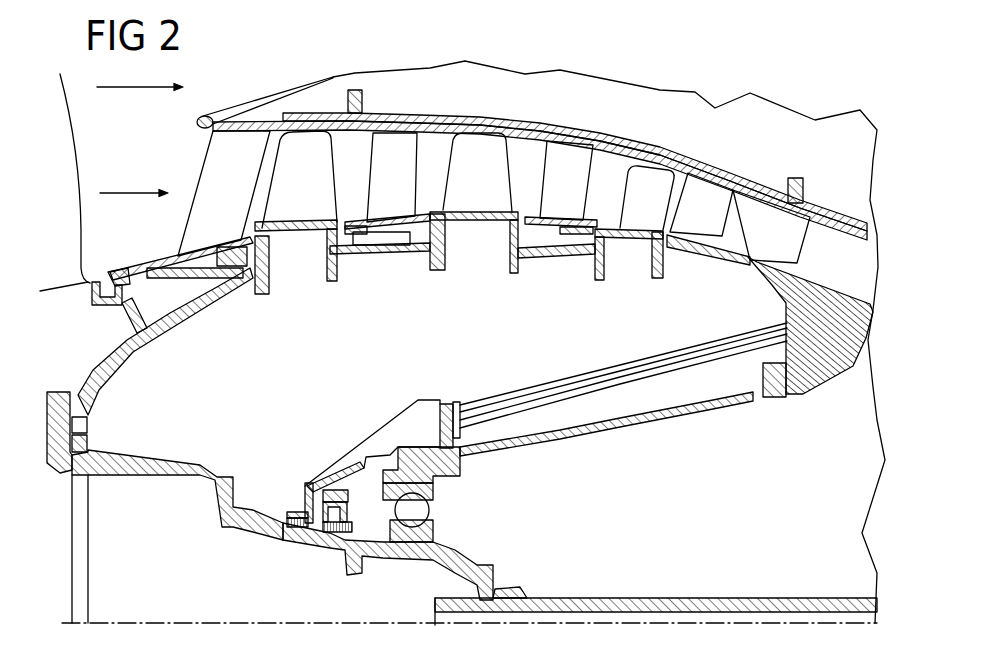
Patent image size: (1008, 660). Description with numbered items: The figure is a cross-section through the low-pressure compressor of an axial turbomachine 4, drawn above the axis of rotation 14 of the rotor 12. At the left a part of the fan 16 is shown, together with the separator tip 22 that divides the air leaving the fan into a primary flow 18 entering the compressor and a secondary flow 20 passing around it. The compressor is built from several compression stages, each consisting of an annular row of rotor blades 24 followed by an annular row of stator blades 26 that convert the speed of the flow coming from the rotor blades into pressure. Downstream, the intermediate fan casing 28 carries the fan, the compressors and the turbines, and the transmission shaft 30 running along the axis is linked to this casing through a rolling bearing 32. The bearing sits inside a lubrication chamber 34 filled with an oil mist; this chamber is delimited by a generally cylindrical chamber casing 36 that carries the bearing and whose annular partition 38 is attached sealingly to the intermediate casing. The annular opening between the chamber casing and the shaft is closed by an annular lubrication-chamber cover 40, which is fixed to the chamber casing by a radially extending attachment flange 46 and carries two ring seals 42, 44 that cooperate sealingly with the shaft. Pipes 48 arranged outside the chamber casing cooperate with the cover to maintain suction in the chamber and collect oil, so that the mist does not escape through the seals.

The turbomachine 4 is at (726, 137).
The rotor 12 is at (90, 413).
The axis of rotation 14 is at (167, 622).
The fan 16 is at (66, 195).
The primary flow 18 is at (134, 179).
The secondary flow 20 is at (140, 74).
The separator tip 22 is at (195, 121).
The rotor blades 24 is at (468, 180).
The stator blades 26 is at (455, 193).
The intermediate fan casing 28 is at (821, 390).
The transmission shaft 30 is at (675, 598).
The bearing 32 is at (437, 528).
The lubrication chamber 34 is at (775, 568).
The chamber casing 36 is at (686, 439).
The annular partition 38 is at (600, 432).
The lubrication-chamber cover 40 is at (345, 442).
The ring seal 42 is at (285, 543).
The ring seal 44 is at (327, 543).
The attachment flange 46 is at (440, 404).
The pipe 48 is at (557, 387).